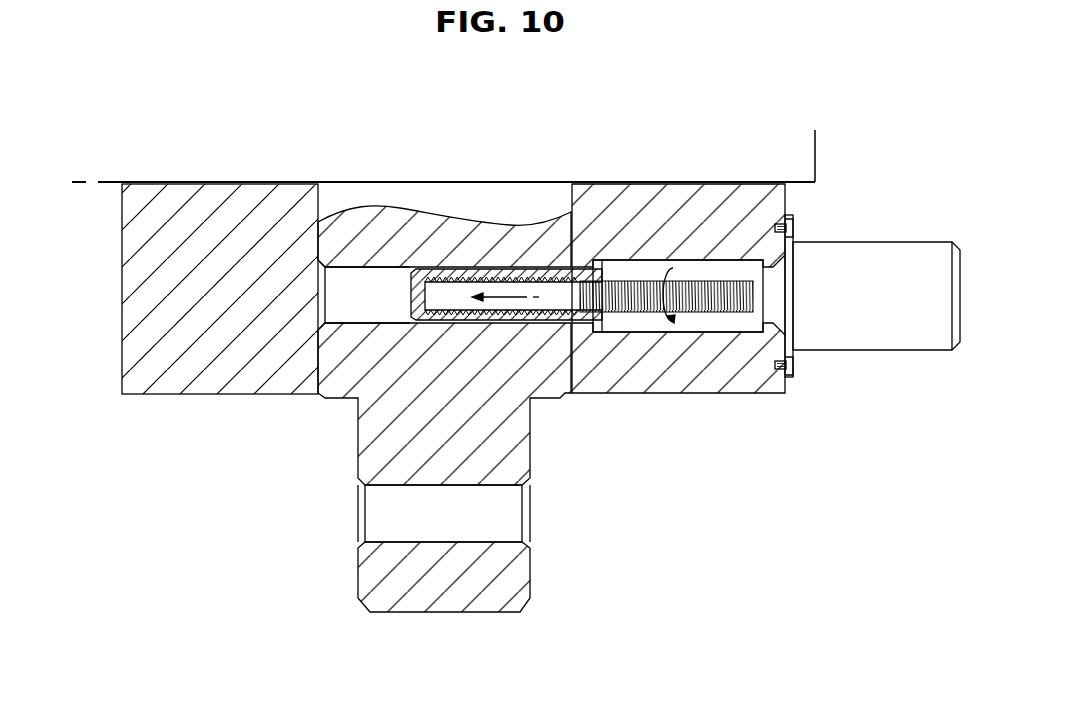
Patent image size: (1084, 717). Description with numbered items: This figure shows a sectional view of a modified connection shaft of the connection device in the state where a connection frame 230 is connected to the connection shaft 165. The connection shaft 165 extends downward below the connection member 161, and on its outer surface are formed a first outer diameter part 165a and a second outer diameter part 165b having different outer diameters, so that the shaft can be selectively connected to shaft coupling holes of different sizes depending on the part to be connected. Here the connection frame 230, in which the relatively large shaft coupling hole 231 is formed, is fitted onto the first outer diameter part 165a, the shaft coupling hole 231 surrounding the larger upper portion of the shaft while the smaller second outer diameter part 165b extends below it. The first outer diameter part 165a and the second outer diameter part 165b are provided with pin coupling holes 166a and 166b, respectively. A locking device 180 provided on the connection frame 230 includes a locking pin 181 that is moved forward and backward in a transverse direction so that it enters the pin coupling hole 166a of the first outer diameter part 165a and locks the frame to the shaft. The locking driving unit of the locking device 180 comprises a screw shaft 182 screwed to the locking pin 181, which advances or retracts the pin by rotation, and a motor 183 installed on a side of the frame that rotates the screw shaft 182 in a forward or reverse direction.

The connection member 161 is at (797, 158).
The connection shaft 165 is at (388, 390).
The first outer diameter part 165a is at (335, 367).
The second outer diameter part 165b is at (372, 580).
The pin coupling hole 166a is at (378, 275).
The pin coupling hole 166b is at (447, 543).
The locking device 180 is at (867, 281).
The locking pin 181 is at (547, 318).
The screw shaft 182 is at (703, 320).
The motor 183 is at (878, 337).
The connection frame 230 is at (137, 313).
The shaft coupling hole 231 is at (572, 224).